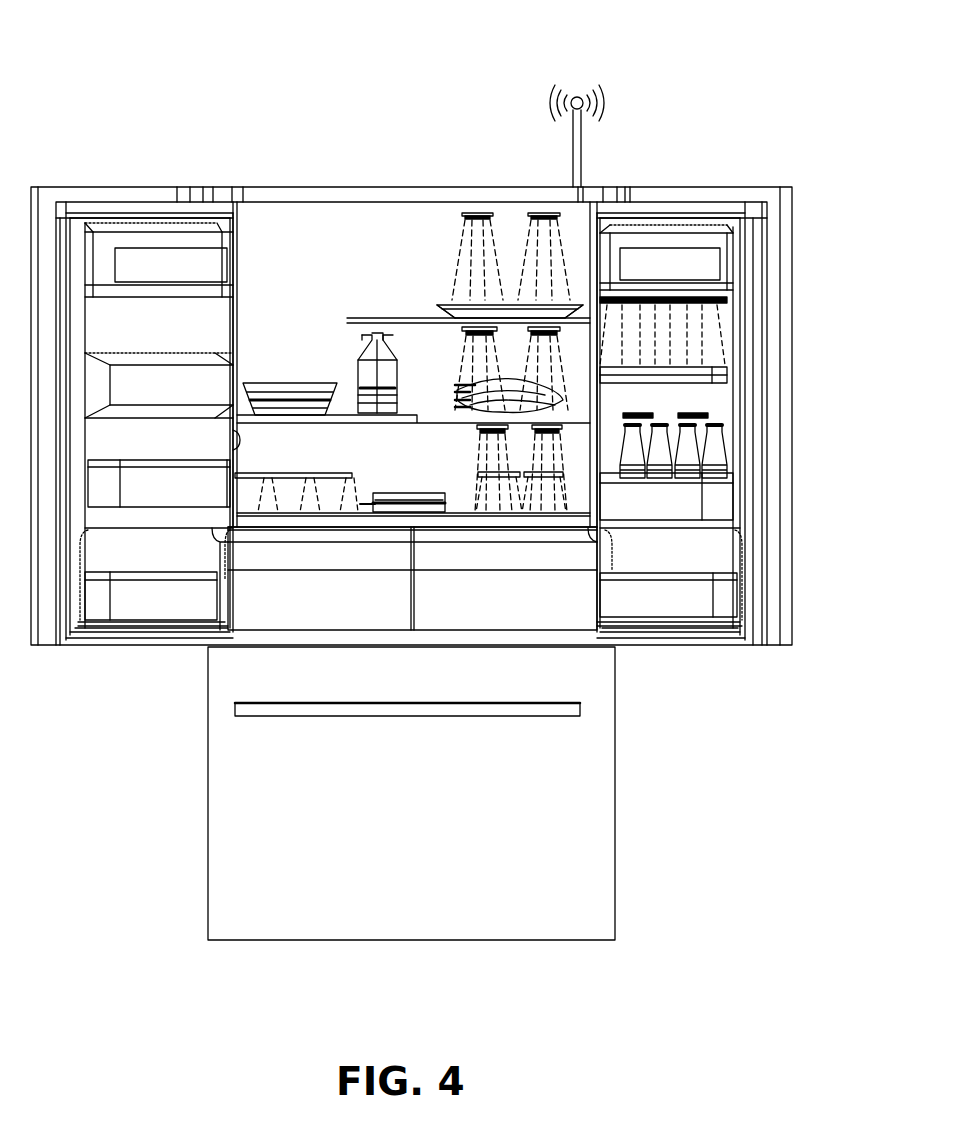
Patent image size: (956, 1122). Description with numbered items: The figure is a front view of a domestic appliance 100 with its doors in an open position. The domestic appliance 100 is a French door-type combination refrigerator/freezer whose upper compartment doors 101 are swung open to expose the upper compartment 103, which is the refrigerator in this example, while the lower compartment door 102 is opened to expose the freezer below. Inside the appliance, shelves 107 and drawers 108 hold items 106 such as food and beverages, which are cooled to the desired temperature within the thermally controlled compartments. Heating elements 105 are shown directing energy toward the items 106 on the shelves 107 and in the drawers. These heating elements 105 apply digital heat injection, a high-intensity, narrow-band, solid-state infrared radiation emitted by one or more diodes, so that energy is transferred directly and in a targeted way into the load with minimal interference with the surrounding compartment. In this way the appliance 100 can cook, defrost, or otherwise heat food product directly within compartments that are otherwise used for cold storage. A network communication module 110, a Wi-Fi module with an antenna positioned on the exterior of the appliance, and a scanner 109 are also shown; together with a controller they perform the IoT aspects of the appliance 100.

The domestic appliance 100 is at (150, 703).
The upper compartment doors 101 is at (133, 190).
The lower compartment door 102 is at (617, 838).
The upper compartment 103 is at (407, 205).
The heating elements 105 is at (545, 328).
The items 106 is at (478, 310).
The shelves 107 is at (365, 513).
The drawers 108 is at (527, 610).
The scanner 109 is at (233, 436).
The network communication module 110 is at (583, 146).